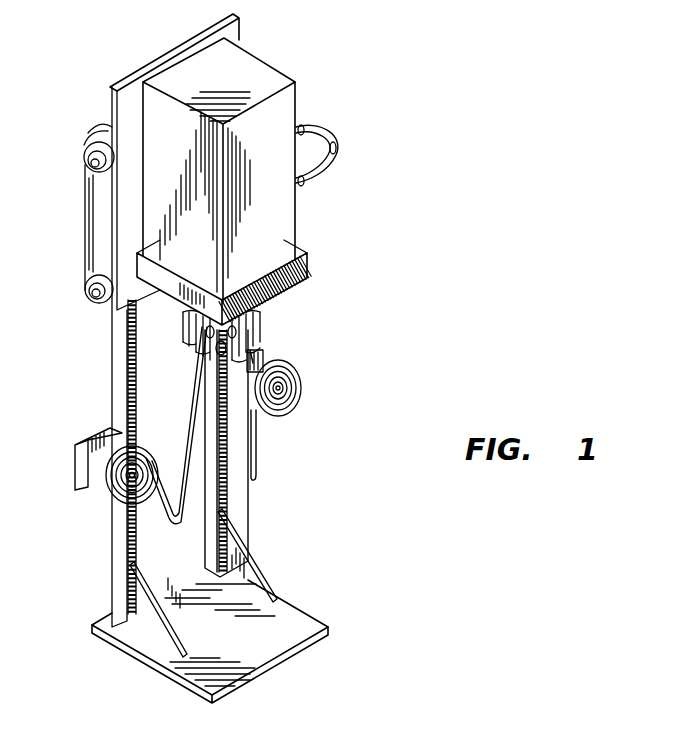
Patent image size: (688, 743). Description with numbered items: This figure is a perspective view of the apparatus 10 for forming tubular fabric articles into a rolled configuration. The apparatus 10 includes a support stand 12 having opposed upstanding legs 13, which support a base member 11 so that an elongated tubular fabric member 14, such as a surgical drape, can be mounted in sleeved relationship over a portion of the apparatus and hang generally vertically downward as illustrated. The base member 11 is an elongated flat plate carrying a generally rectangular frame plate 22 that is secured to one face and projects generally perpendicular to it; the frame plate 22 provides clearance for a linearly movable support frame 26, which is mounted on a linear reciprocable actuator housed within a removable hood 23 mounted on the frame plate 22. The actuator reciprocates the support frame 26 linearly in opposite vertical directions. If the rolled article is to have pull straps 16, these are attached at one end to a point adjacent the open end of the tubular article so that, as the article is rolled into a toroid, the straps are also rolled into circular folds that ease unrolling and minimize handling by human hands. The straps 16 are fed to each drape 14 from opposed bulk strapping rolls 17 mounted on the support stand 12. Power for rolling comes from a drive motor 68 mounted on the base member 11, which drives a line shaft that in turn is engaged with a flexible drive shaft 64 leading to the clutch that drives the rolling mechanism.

The apparatus 10 is at (362, 226).
The base member 11 is at (155, 63).
The support stand 12 is at (118, 362).
The upstanding legs 13 is at (118, 335).
The tubular fabric member 14 is at (254, 520).
The pull straps 16 is at (188, 417).
The bulk strapping rolls 17 is at (102, 490).
The frame plate 22 is at (290, 290).
The removable hood 23 is at (275, 75).
The support frame 26 is at (262, 329).
The flexible drive shaft 64 is at (333, 127).
The drive motor 68 is at (100, 122).